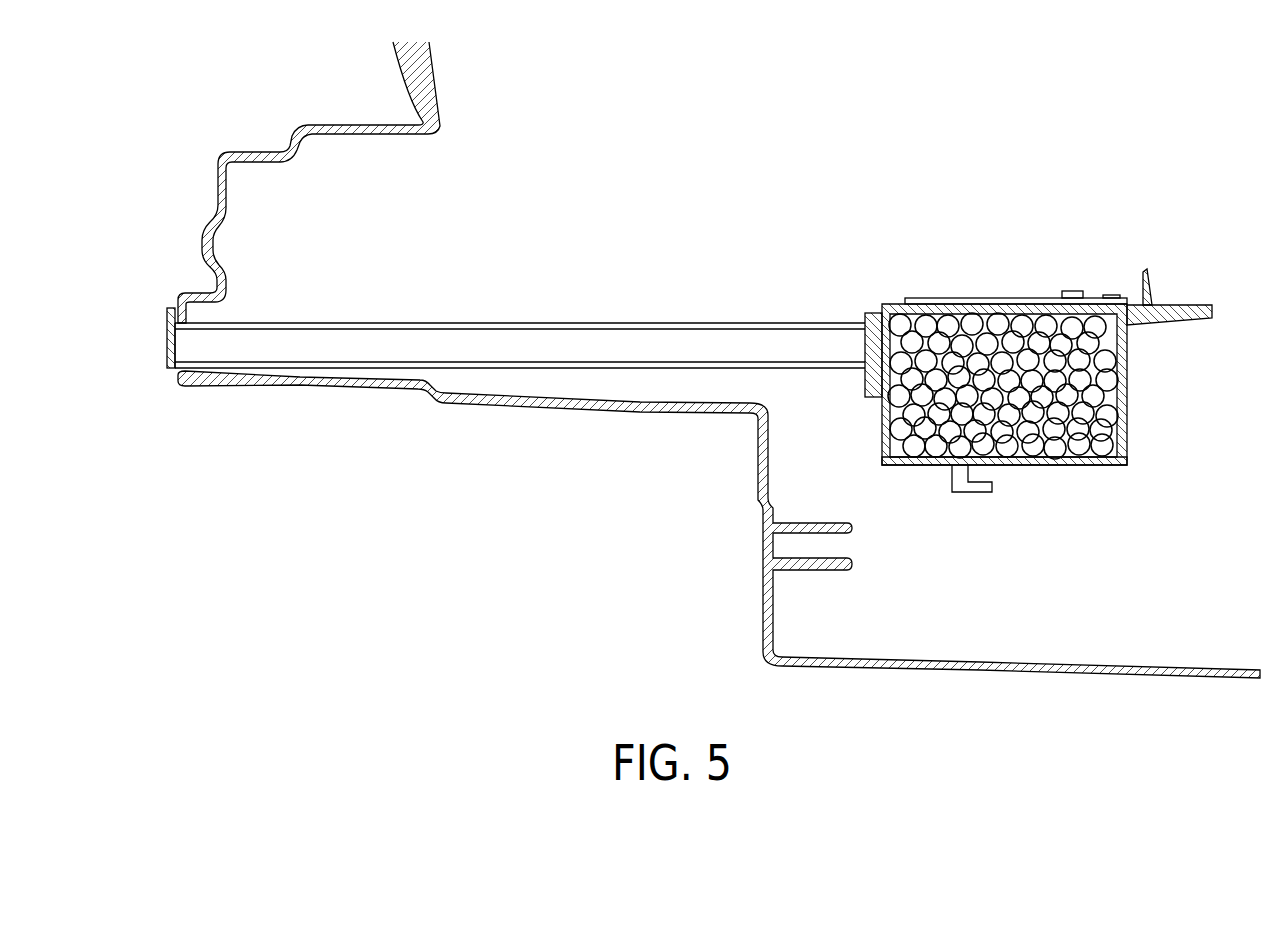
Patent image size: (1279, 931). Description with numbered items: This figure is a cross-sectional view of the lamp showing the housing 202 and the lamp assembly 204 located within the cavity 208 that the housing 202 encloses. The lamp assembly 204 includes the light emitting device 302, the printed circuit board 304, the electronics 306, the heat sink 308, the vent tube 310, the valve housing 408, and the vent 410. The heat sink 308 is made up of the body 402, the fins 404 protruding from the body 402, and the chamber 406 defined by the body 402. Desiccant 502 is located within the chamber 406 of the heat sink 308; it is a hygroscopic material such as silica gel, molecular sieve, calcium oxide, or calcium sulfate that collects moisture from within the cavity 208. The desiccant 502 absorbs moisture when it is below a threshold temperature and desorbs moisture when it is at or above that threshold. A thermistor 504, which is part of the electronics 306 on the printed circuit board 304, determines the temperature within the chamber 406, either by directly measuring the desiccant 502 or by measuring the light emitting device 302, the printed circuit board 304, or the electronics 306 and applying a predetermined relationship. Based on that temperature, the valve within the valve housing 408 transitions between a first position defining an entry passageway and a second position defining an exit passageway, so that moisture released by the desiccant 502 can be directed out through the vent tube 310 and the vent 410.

The housing 202 is at (308, 124).
The lamp assembly 204 is at (1158, 226).
The cavity 208 is at (1058, 616).
The light emitting device 302 is at (1113, 295).
The printed circuit board 304 is at (927, 298).
The electronics 306 is at (1034, 289).
The heat sink 308 is at (1128, 386).
The vent tube 310 is at (502, 323).
The body 402 is at (1097, 466).
The fins 404 is at (1197, 313).
The chamber 406 is at (1024, 466).
The valve housing 408 is at (874, 312).
The vent 410 is at (167, 342).
The desiccant 502 is at (917, 440).
The thermistor 504 is at (1072, 290).